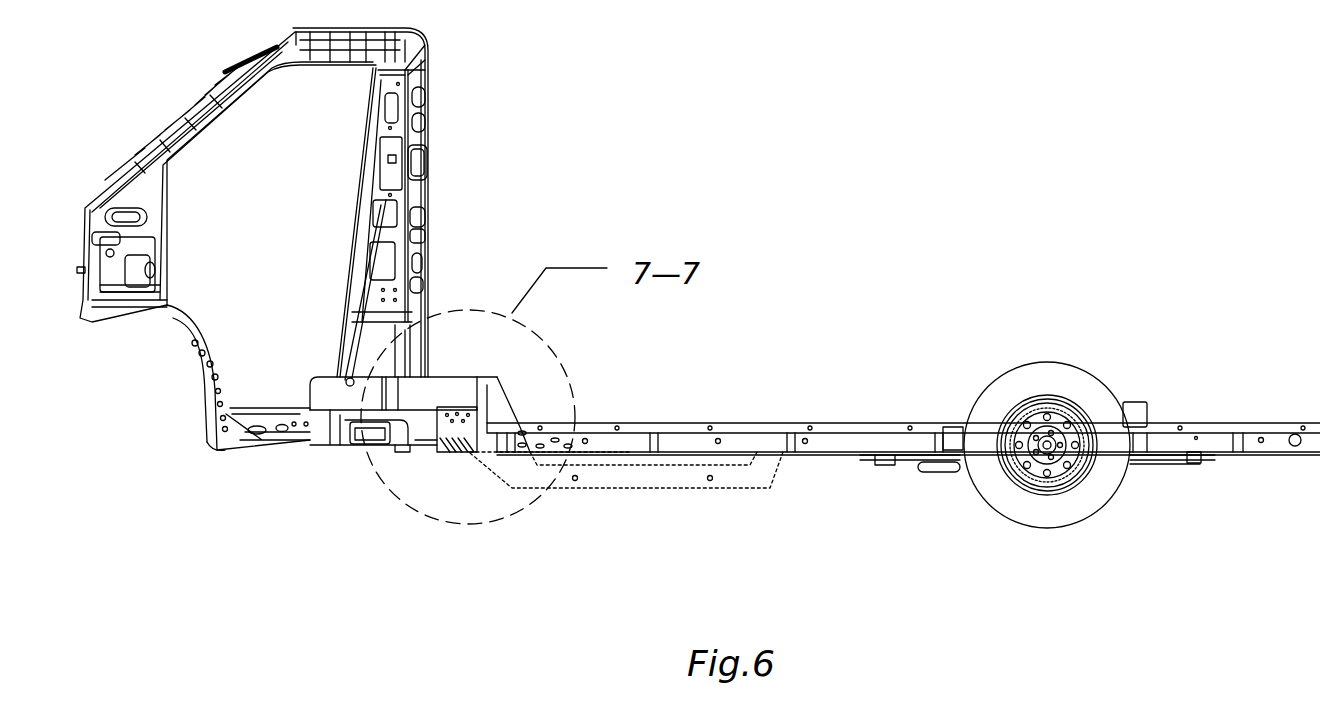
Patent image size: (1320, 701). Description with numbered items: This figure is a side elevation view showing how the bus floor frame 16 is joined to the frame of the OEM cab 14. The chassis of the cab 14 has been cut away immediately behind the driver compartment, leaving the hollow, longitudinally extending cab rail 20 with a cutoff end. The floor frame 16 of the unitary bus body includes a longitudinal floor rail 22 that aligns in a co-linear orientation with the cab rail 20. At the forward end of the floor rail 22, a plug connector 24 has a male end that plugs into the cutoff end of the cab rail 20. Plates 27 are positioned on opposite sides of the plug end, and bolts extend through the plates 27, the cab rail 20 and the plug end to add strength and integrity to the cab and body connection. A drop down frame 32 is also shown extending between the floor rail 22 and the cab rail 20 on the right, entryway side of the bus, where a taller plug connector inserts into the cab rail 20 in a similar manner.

The OEM cab 14 is at (428, 105).
The floor frame 16 is at (897, 398).
The cab rail 20 is at (445, 383).
The floor rail 22 is at (755, 442).
The plug connector 24 is at (495, 401).
The plates 27 is at (460, 418).
The drop down frame 32 is at (657, 480).